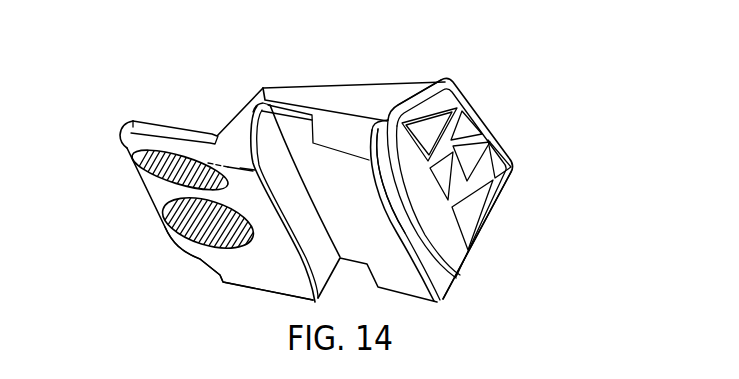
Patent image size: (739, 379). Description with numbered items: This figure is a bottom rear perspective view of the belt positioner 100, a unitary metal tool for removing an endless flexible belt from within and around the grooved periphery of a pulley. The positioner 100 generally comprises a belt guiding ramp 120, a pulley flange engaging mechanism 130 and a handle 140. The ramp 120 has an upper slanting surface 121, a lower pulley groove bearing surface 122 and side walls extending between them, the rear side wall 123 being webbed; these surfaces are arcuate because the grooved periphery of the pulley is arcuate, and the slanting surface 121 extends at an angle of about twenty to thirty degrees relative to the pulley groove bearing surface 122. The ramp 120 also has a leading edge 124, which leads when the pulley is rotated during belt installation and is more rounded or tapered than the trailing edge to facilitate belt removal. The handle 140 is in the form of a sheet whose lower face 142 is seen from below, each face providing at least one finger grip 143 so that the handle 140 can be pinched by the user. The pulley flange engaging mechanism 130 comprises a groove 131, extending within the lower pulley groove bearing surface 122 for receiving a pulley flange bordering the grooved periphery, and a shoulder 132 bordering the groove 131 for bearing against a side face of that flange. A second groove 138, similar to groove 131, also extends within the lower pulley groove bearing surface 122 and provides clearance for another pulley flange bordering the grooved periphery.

The belt positioner 100 is at (146, 239).
The belt guiding ramp 120 is at (411, 79).
The upper slanting surface 121 is at (357, 93).
The lower pulley groove bearing surface 122 is at (412, 277).
The rear side wall 123 is at (497, 138).
The leading edge 124 is at (393, 98).
The pulley flange engaging mechanism 130 is at (262, 99).
The groove 131 is at (293, 117).
The shoulder 132 is at (303, 212).
The second groove 138 is at (413, 183).
The handle 140 is at (122, 118).
The lower face 142 is at (213, 257).
The finger grip 143 is at (177, 212).